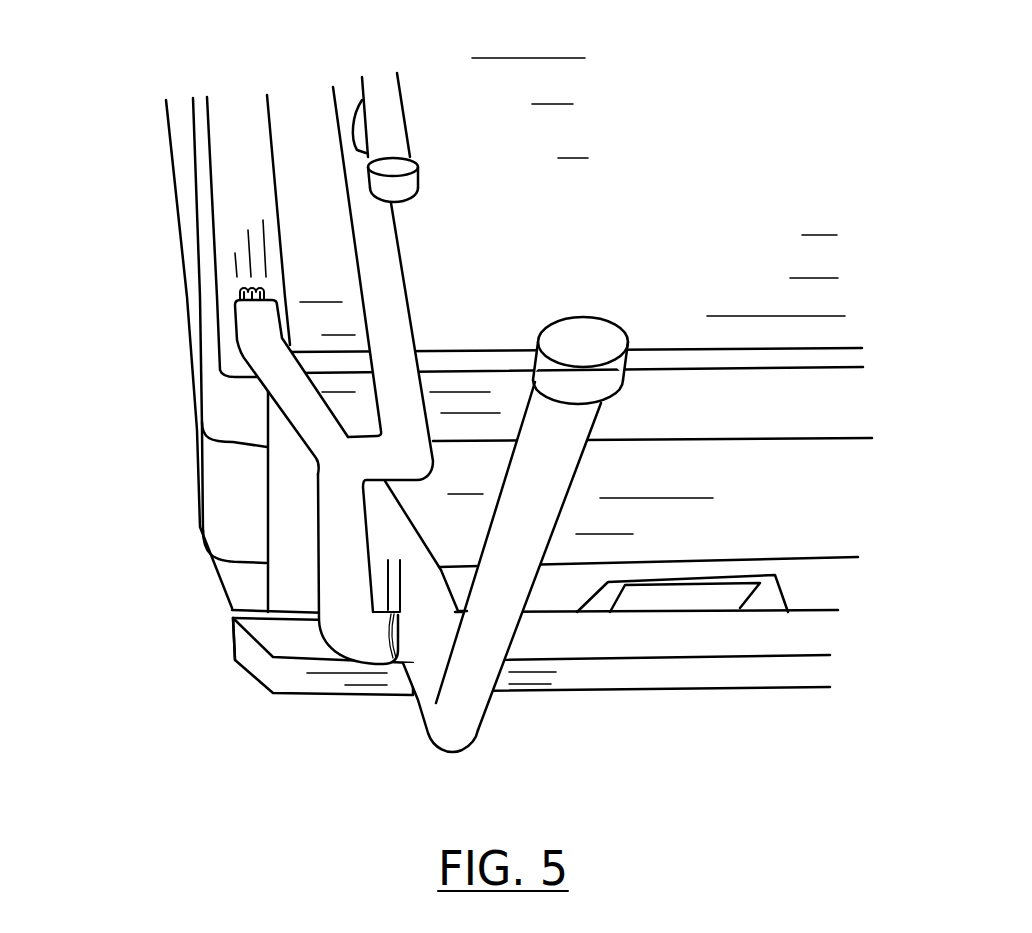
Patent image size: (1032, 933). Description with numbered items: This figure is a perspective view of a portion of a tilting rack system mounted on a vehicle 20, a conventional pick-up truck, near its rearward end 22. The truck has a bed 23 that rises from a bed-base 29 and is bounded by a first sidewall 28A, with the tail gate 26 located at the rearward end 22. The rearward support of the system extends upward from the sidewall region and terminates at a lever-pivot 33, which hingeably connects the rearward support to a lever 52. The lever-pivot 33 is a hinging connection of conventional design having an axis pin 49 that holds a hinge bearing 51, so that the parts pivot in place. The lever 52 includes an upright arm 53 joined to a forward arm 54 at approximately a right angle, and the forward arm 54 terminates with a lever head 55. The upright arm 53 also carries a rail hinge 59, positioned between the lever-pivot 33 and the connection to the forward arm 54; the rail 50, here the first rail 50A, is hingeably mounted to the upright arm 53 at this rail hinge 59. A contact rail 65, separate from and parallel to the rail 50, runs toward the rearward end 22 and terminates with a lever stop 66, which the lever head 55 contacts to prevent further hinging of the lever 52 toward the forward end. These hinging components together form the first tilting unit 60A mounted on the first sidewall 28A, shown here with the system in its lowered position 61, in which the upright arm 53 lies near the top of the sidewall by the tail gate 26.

The vehicle 20 is at (245, 132).
The rearward end 22 is at (218, 460).
The bed 23 is at (740, 205).
The tail gate 26 is at (832, 520).
The first sidewall 28A is at (242, 185).
The bed-base 29 is at (573, 256).
The lever-pivot 33 is at (267, 293).
The axis pin 49 is at (242, 300).
The rail 50 is at (334, 375).
The first rail 50A is at (358, 202).
The hinge bearing 51 is at (240, 297).
The lever 52 is at (514, 562).
The upright arm 53 is at (309, 427).
The forward arm 54 is at (535, 431).
The lever head 55 is at (590, 350).
The rail hinge 59 is at (395, 660).
The first tilting unit 60A is at (136, 98).
The lowered position 61 is at (797, 107).
The contact rail 65 is at (388, 128).
The lever stop 66 is at (400, 192).